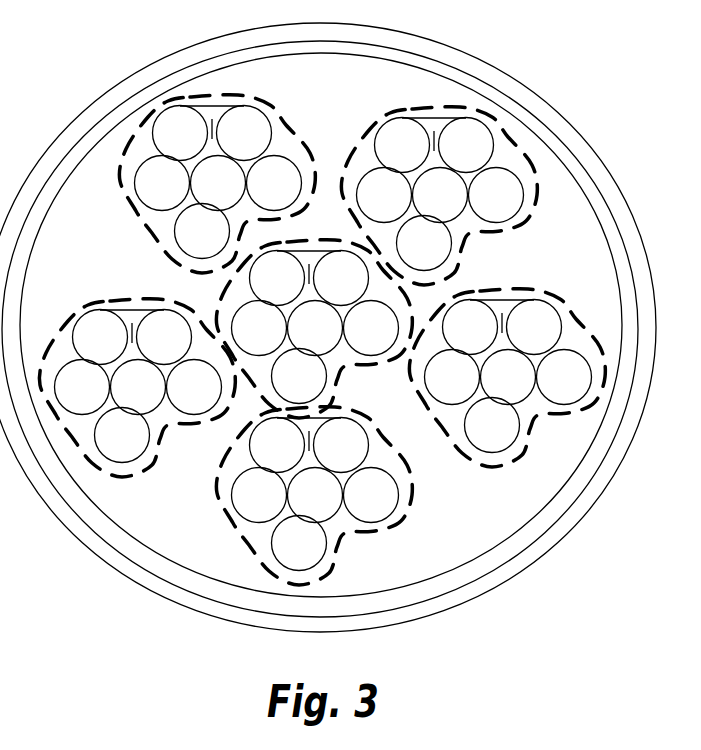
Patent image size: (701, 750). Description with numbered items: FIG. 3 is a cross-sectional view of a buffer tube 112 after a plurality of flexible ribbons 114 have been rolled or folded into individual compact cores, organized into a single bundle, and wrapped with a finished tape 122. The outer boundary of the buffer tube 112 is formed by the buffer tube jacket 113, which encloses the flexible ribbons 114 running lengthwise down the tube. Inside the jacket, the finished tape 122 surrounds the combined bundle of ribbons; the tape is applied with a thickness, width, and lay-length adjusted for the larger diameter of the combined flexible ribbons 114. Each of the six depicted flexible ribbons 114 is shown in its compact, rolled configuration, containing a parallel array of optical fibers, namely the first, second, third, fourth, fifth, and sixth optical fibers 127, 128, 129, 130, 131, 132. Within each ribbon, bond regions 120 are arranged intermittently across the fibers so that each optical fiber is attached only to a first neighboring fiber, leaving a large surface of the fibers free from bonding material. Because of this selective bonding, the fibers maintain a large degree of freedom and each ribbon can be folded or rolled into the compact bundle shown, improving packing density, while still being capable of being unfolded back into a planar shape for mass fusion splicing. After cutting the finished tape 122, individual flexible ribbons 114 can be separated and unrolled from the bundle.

The buffer tube 112 is at (328, 327).
The buffer tube jacket 113 is at (320, 313).
The flexible ribbons 114 is at (322, 340).
The bond regions 120 is at (317, 278).
The finished tape 122 is at (321, 325).
The first optical fiber 127 is at (161, 145).
The second optical fiber 128 is at (225, 145).
The third optical fiber 129 is at (143, 195).
The fourth optical fiber 130 is at (199, 195).
The fifth optical fiber 131 is at (255, 195).
The sixth optical fiber 132 is at (183, 243).